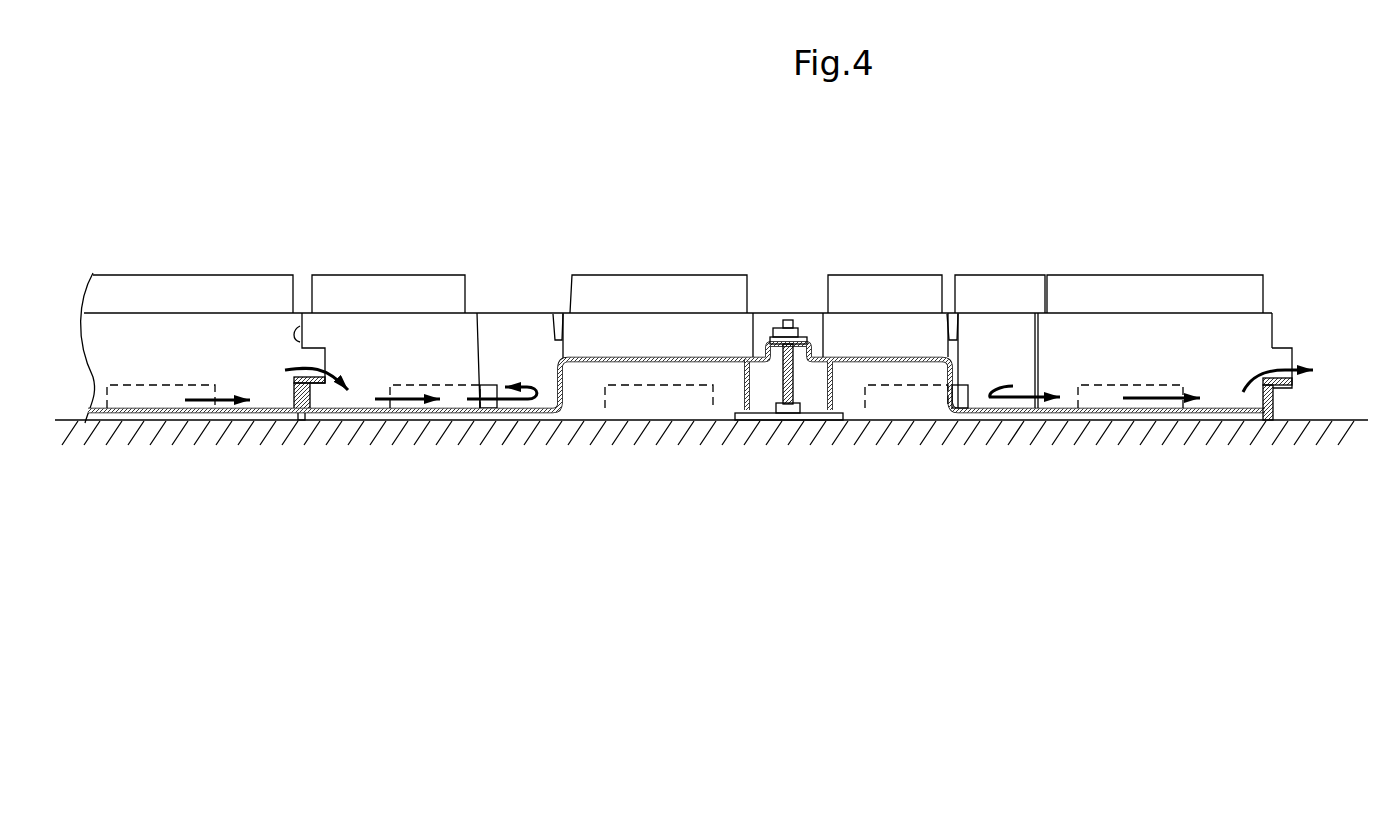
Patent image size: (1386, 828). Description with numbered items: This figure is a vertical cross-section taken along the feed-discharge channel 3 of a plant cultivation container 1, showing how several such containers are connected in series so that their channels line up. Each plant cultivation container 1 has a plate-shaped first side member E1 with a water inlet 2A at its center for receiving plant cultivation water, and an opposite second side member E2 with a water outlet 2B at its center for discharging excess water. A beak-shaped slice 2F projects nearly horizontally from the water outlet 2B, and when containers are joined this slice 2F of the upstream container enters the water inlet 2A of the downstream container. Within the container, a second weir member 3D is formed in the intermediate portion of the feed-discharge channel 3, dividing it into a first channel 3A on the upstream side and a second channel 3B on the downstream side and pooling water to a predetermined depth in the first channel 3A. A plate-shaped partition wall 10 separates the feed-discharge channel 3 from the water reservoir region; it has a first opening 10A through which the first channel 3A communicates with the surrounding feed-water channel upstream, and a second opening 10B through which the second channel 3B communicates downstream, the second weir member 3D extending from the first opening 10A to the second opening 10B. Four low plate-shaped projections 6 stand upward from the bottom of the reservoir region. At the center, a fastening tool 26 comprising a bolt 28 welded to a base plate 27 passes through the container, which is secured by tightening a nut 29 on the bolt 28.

The plant cultivation container 1 is at (192, 187).
The first channel 3A is at (153, 408).
The water inlet 2A is at (298, 358).
The first side member E1 is at (300, 328).
The first opening 10A is at (487, 338).
The partition wall 10 is at (617, 330).
The plate-shaped projection 6 is at (442, 383).
The feed-discharge channel 3 is at (682, 343).
The nut 29 is at (802, 327).
The second weir member 3D is at (870, 357).
The second opening 10B is at (1023, 340).
The fastening tool 26 is at (800, 380).
The base plate 27 is at (812, 405).
The bolt 28 is at (785, 383).
The second side member E2 is at (1275, 327).
The water outlet 2B is at (1285, 350).
The slice 2F is at (1280, 385).
The second channel 3B is at (1085, 392).